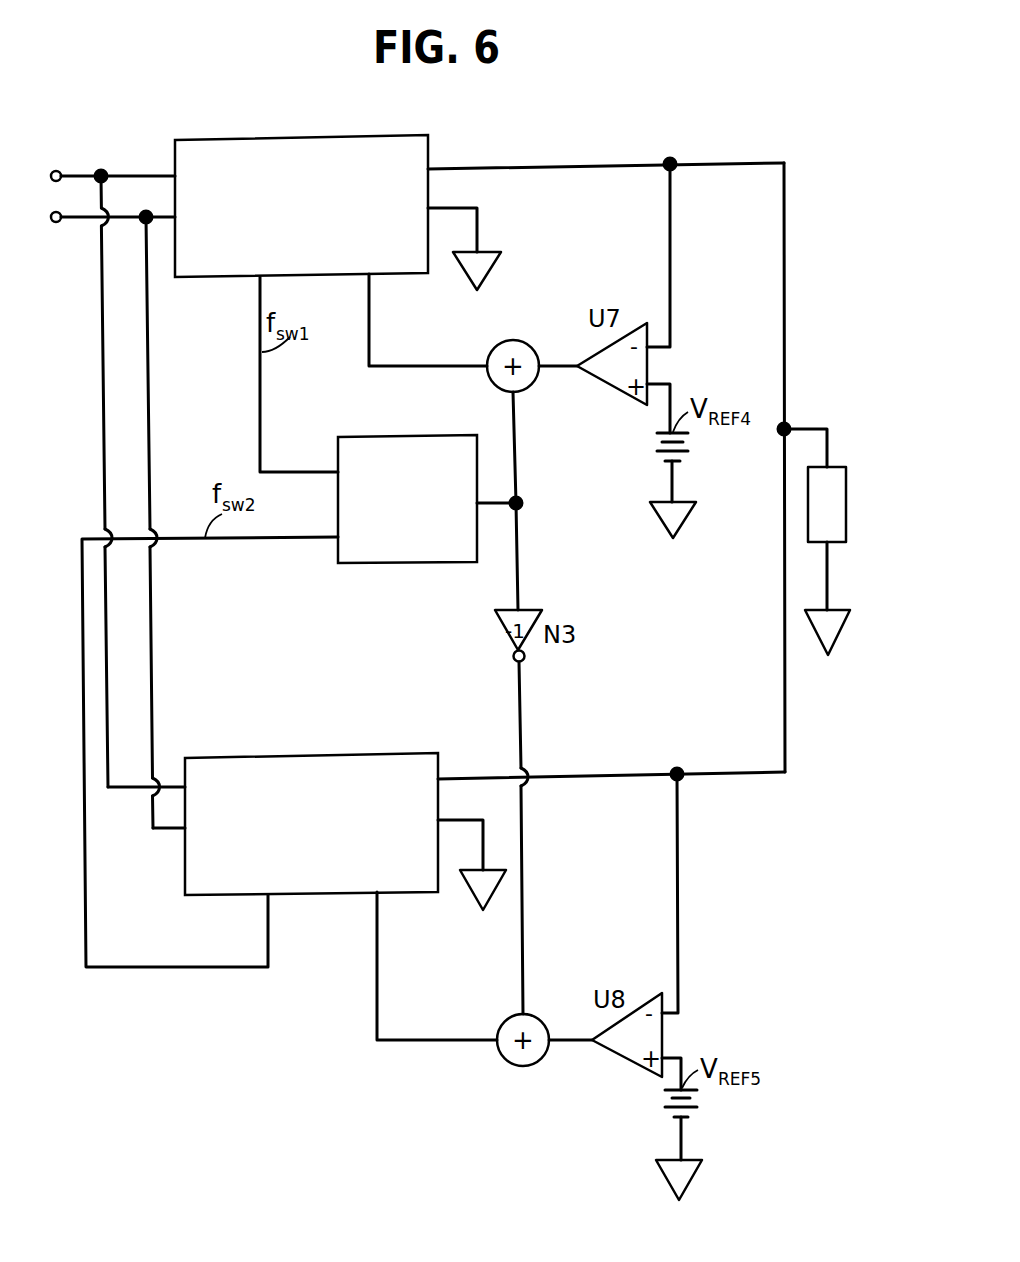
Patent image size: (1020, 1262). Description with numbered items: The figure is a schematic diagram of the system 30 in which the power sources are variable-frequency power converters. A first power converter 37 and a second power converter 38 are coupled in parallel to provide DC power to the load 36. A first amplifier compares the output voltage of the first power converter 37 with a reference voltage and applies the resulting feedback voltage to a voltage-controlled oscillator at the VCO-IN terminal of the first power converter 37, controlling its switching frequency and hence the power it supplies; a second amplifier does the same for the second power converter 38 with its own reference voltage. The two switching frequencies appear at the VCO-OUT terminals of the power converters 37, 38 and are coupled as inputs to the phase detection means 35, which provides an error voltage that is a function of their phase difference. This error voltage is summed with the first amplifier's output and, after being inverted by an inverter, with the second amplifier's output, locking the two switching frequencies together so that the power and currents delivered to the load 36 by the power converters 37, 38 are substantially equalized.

The system 30 is at (517, 147).
The phase detection means 35 is at (390, 563).
The load 36 is at (846, 512).
The first power converter 37 is at (240, 140).
The second power converter 38 is at (210, 758).